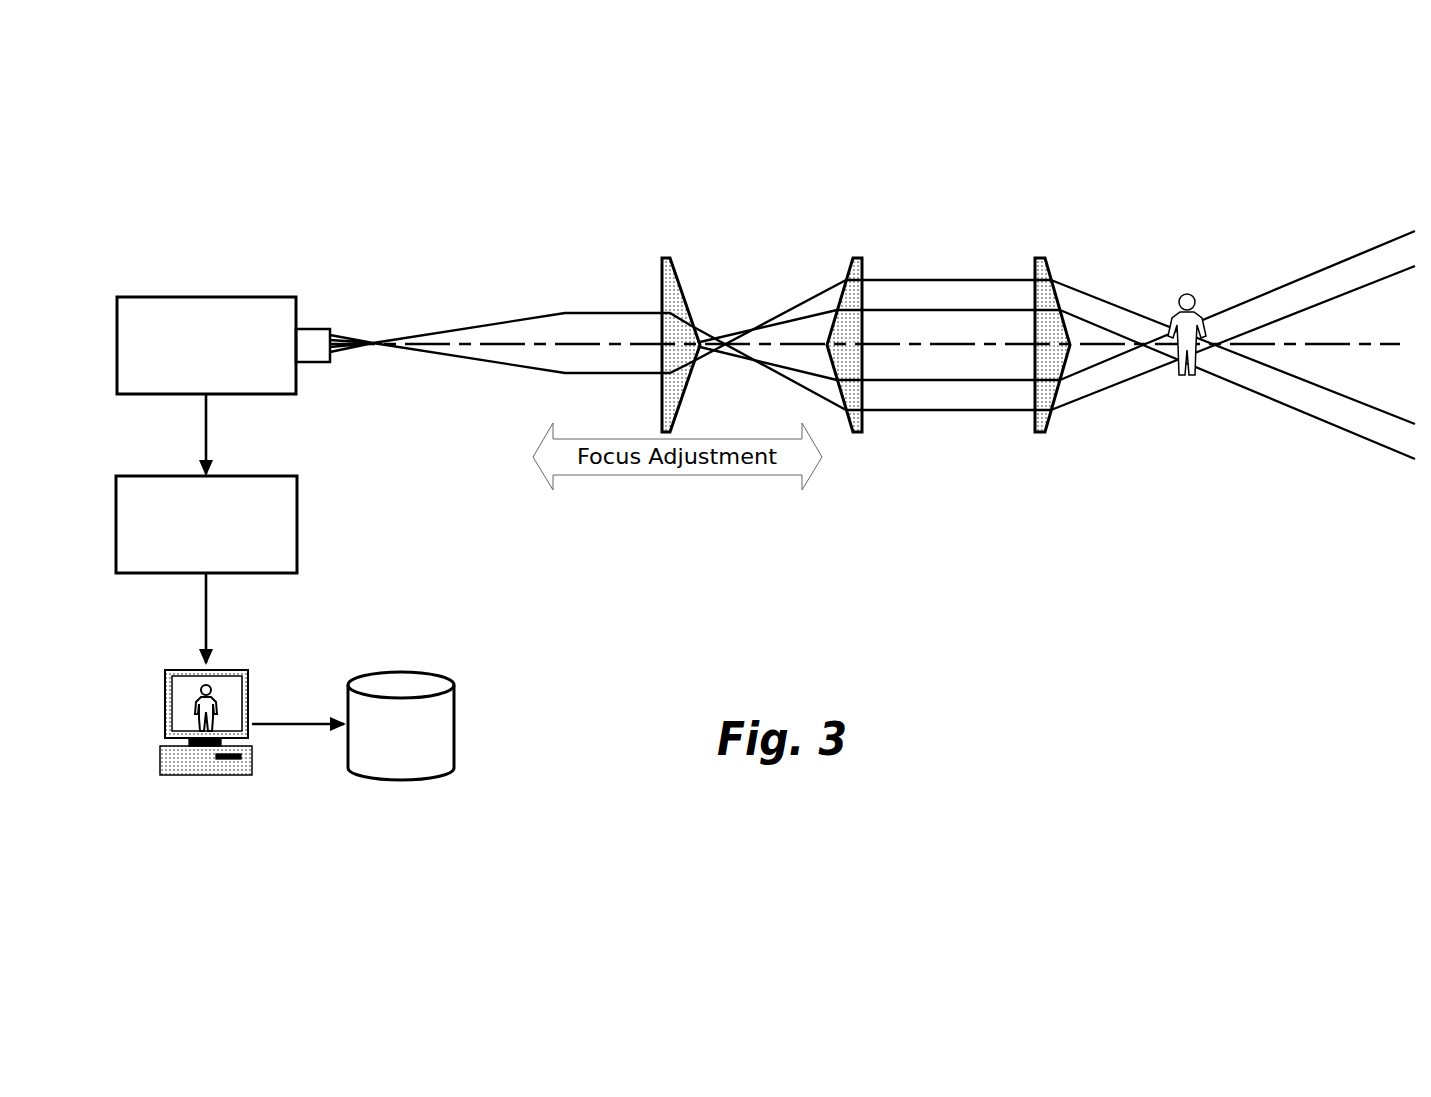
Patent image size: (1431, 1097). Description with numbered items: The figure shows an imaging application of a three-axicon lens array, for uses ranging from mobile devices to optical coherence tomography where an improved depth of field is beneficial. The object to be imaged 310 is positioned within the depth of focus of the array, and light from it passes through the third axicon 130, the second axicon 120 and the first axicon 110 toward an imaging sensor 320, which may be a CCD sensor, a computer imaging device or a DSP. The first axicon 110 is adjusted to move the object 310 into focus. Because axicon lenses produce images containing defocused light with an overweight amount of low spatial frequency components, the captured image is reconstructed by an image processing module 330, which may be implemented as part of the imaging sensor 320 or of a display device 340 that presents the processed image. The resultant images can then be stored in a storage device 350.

The first axicon 110 is at (633, 262).
The second axicon 120 is at (825, 258).
The third axicon 130 is at (1015, 263).
The object to be imaged 310 is at (1167, 275).
The imaging sensor 320 is at (225, 297).
The image processing module 330 is at (198, 470).
The display device 340 is at (233, 665).
The storage device 350 is at (405, 668).